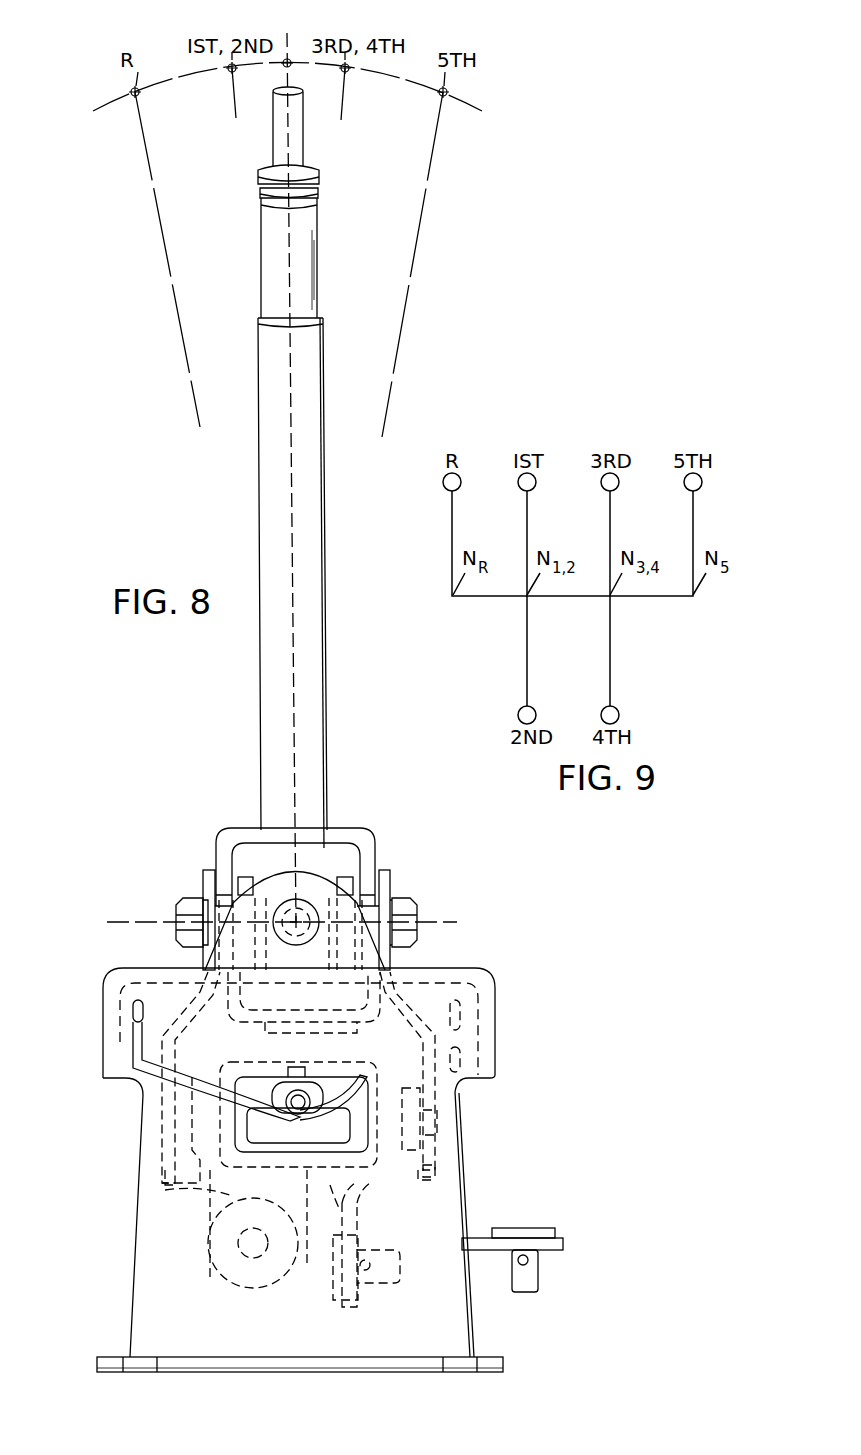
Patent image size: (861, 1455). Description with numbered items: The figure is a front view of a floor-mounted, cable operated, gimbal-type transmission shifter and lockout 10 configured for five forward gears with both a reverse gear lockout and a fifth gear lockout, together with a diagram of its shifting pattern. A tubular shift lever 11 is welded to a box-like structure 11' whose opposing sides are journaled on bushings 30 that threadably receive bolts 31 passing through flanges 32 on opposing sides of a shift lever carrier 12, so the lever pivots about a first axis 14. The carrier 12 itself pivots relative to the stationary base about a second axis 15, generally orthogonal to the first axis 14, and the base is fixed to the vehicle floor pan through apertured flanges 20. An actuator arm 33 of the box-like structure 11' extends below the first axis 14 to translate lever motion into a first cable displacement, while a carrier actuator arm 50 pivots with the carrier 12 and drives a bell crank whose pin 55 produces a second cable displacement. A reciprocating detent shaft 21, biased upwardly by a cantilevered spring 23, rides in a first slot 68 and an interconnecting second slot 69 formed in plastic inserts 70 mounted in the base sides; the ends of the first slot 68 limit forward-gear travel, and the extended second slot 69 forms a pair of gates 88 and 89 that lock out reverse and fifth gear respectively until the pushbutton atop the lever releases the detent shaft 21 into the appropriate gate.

The transmission shifter and reverse gear lockout 10 is at (168, 762).
The shift lever 11 is at (292, 467).
The box-like structure 11' is at (324, 838).
The shift lever carrier 12 is at (372, 910).
The first axis 14 is at (140, 922).
The second axis 15 is at (296, 922).
The apertured flanges 20 is at (112, 1360).
The detent shaft 21 is at (337, 1080).
The cantilevered spring 23 is at (140, 1052).
The bushings 30 is at (247, 885).
The bolts 31 is at (177, 930).
The flanges 32 is at (208, 880).
The actuator arm 33 is at (357, 1197).
The carrier actuator arm 50 is at (213, 1190).
The pin 55 is at (473, 1237).
The first slot 68 is at (303, 1093).
The second slot 69 is at (305, 1143).
The plastic inserts 70 is at (305, 1087).
The gate 88 is at (257, 1120).
The second gate 89 is at (330, 1130).